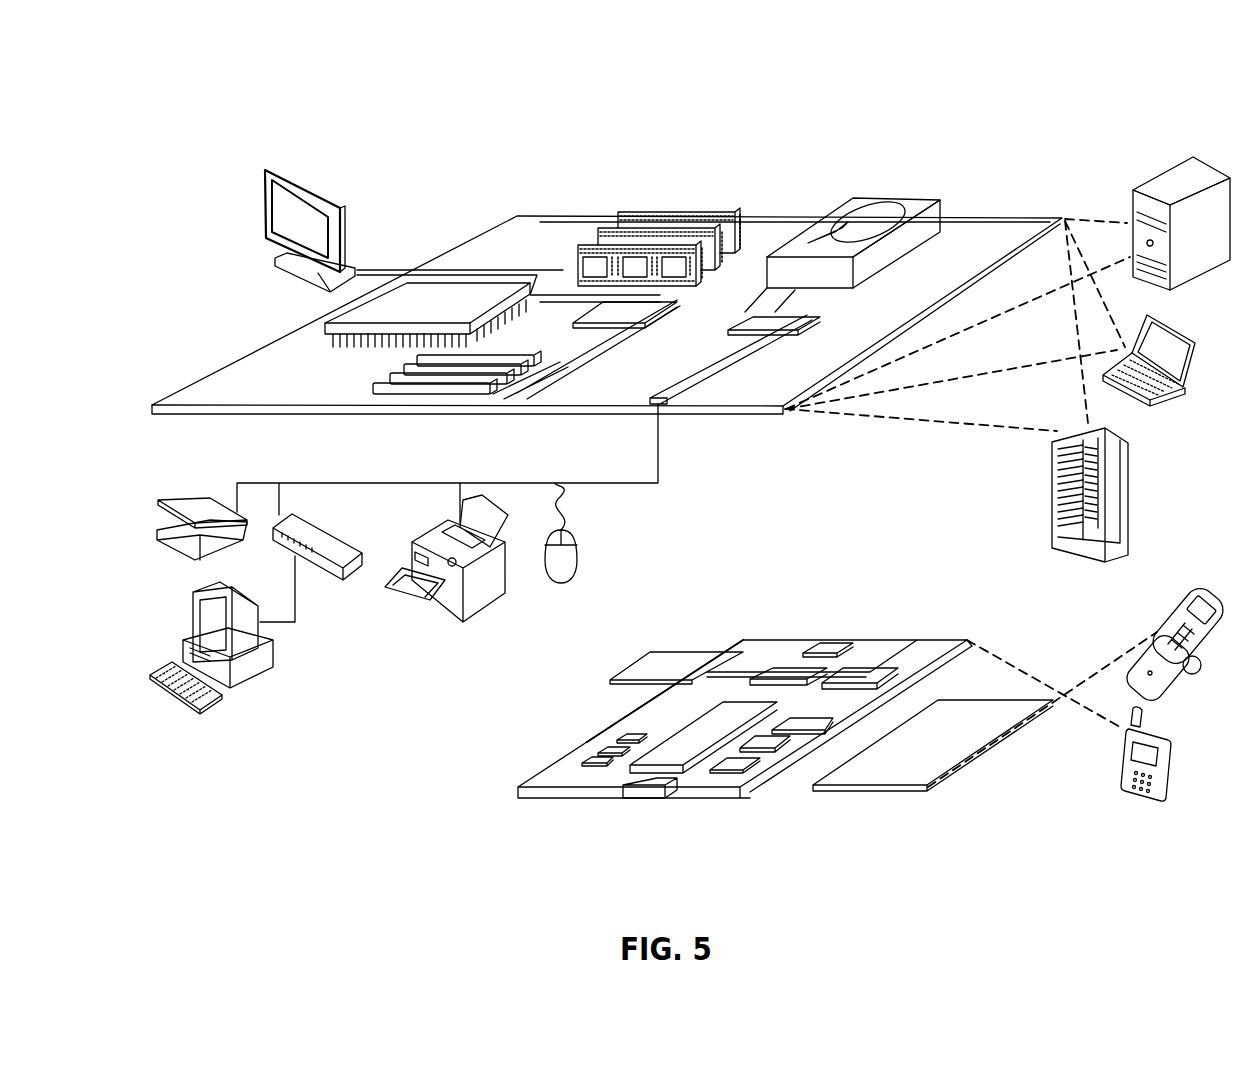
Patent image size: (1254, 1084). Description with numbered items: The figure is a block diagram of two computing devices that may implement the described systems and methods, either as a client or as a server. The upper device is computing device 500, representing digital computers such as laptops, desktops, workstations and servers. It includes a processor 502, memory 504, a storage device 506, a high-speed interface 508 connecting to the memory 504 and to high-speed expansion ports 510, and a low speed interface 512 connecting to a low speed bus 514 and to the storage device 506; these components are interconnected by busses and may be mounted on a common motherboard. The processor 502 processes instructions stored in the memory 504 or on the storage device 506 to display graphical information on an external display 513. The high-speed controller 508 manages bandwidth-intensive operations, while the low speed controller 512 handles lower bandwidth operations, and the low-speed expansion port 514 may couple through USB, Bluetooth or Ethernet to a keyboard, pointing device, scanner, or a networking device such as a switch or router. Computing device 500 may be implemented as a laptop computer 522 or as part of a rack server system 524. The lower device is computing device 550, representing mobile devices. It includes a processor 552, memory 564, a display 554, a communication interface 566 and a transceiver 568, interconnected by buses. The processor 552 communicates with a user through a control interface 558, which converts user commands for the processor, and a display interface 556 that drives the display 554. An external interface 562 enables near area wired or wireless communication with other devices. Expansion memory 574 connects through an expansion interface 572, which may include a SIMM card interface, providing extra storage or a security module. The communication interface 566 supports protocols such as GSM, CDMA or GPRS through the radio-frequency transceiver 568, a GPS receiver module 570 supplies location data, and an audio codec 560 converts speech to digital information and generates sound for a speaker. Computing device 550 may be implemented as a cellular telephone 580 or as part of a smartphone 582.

The computing device 500 is at (140, 80).
The processor 502 is at (337, 327).
The memory 504 is at (621, 186).
The storage device 506 is at (845, 205).
The high-speed interface 508 is at (603, 312).
The high-speed expansion ports 510 is at (375, 388).
The low speed interface 512 is at (765, 318).
The display monitor 513 is at (262, 172).
The low-speed expansion port 514 is at (668, 404).
The laptop computer 522 is at (1197, 340).
The rack server system 524 is at (1050, 525).
The computing device 550 is at (496, 799).
The processor 552 is at (680, 766).
The display 554 is at (900, 785).
The display interface 556 is at (745, 772).
The control interface 558 is at (780, 752).
The audio codec 560 is at (795, 728).
The external interface 562 is at (648, 798).
The memory 564 is at (588, 762).
The communication interface 566 is at (790, 668).
The transceiver 568 is at (870, 668).
The GPS receiver module 570 is at (835, 650).
The expansion interface 572 is at (722, 652).
The expansion memory 574 is at (655, 652).
The cellular telephone 580 is at (1165, 605).
The smartphone 582 is at (1125, 770).